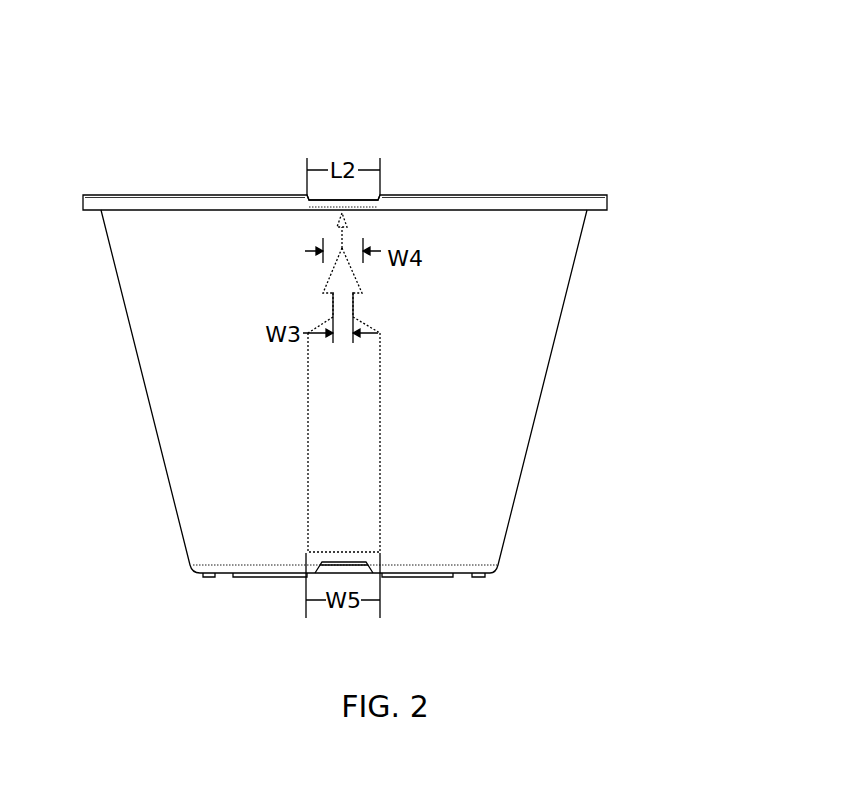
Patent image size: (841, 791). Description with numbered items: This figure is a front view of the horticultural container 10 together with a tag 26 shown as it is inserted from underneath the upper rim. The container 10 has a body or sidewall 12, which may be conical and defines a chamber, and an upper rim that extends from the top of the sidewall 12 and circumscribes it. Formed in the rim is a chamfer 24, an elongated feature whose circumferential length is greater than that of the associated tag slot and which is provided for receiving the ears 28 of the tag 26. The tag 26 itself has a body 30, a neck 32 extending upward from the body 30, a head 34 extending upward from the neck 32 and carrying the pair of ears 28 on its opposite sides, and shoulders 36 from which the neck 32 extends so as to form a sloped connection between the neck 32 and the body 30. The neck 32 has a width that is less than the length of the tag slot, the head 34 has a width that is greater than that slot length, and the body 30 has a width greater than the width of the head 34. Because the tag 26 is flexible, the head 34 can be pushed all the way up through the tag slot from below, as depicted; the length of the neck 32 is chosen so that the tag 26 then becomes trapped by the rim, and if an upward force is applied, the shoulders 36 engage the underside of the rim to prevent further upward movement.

The horticultural container 10 is at (677, 116).
The sidewall 12 is at (535, 400).
The chamfer 24 is at (372, 199).
The tag 26 is at (344, 382).
The ears 28 is at (330, 293).
The body 30 is at (318, 467).
The neck 32 is at (356, 305).
The head 34 is at (340, 278).
The shoulders 36 is at (377, 332).